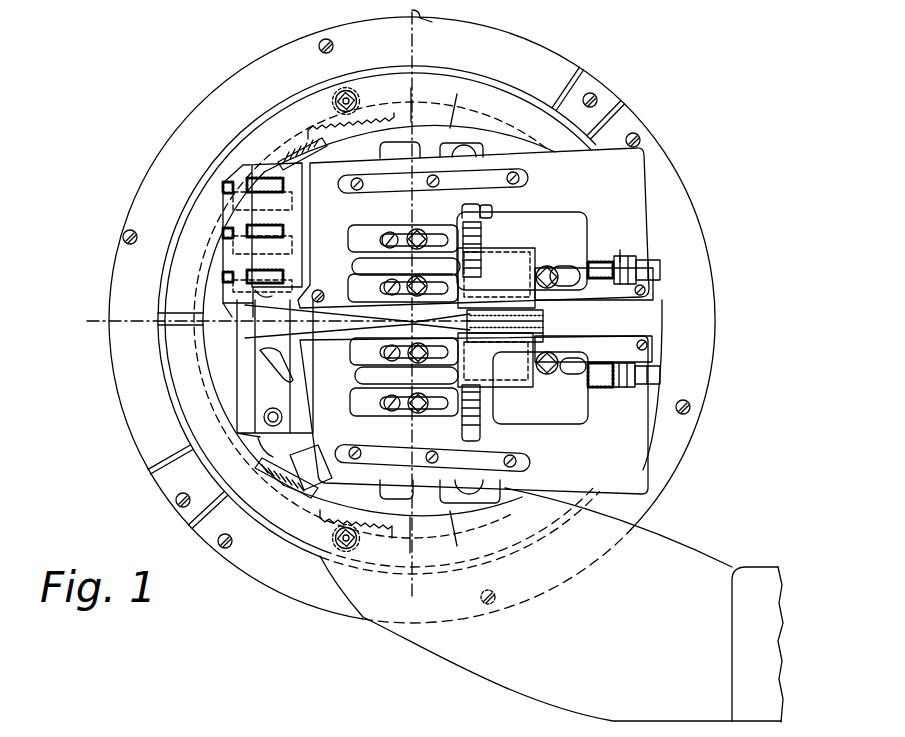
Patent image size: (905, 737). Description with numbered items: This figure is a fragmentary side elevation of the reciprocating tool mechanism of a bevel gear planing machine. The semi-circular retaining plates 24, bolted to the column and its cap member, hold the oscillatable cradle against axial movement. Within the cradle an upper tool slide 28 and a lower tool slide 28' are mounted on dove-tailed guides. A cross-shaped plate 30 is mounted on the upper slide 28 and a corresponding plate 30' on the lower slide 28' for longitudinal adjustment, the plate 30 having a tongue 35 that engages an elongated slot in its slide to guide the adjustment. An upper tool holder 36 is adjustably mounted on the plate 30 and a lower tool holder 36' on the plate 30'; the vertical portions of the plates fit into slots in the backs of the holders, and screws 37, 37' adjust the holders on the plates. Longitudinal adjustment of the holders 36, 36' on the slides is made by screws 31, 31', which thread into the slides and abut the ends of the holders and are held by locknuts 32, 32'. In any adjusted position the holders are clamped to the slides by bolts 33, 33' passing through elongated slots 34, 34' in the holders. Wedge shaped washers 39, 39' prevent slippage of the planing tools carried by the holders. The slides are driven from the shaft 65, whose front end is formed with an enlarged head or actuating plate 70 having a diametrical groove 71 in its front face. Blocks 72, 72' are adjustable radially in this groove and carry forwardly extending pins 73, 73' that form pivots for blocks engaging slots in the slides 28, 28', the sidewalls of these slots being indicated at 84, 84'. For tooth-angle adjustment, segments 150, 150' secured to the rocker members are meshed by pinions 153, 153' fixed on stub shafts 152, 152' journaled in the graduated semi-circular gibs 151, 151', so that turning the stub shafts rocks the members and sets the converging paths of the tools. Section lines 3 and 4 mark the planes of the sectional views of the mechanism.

The semi-circular retaining plate 24 is at (267, 575).
The upper tool slide 28 is at (625, 187).
The lower tool slide 28' is at (507, 415).
The cross-shaped plate 30 is at (505, 270).
The cross-shaped plate 30' is at (507, 390).
The adjusting screw 31 is at (658, 262).
The adjusting screw 31' is at (673, 375).
The locknut 32 is at (625, 255).
The locknut 32' is at (655, 392).
The bolt 33 is at (412, 228).
The bolt 33' is at (425, 394).
The elongated slot 34 is at (464, 222).
The elongated slot 34' is at (593, 377).
The tongue 35 is at (548, 266).
The upper tool holder 36 is at (375, 256).
The lower tool holder 36' is at (420, 382).
The screw 37 is at (482, 208).
The screw 37' is at (492, 421).
The wedge shaped washer 39 is at (482, 272).
The wedge shaped washer 39' is at (540, 388).
The shaft 65 is at (243, 350).
The actuating plate 70 is at (240, 370).
The diametrical slot 71 is at (260, 383).
The block 72 is at (285, 222).
The block 72' is at (393, 455).
The pin 73 is at (272, 224).
The pin 73' is at (307, 410).
The slot sidewall 84 is at (248, 310).
The slot sidewall 84' is at (357, 337).
The segment 150 is at (380, 110).
The segment 150' is at (325, 514).
The gib 151 is at (530, 115).
The gib 151' is at (209, 507).
The stub shaft 152 is at (335, 91).
The stub shaft 152' is at (322, 552).
The pinion 153 is at (347, 87).
The pinion 153' is at (317, 532).
The section line 3- 3 is at (410, 306).
The section line 4- 4 is at (266, 172).